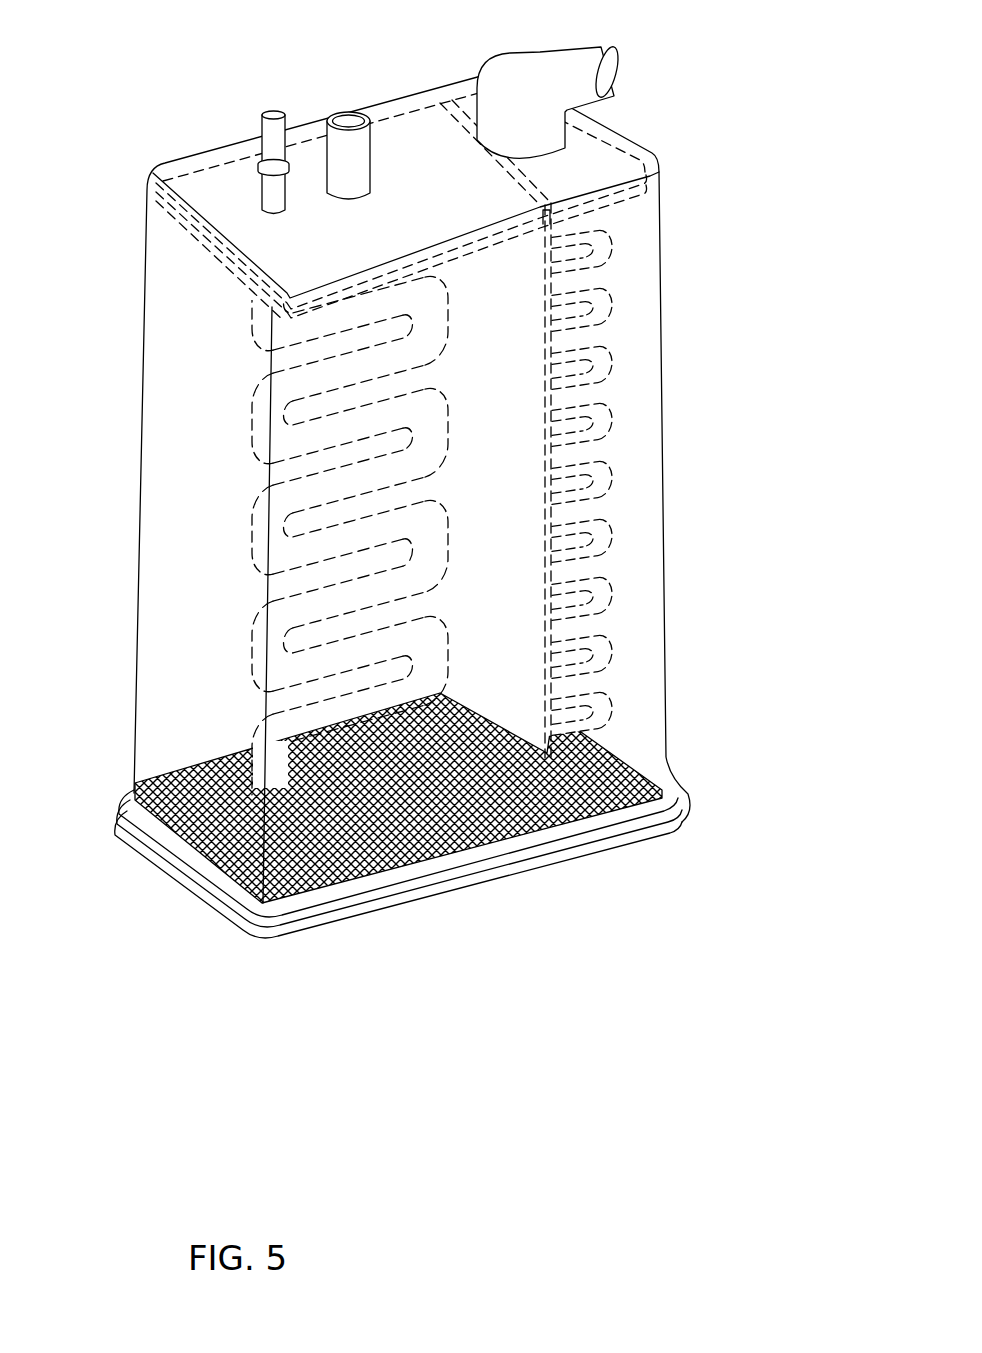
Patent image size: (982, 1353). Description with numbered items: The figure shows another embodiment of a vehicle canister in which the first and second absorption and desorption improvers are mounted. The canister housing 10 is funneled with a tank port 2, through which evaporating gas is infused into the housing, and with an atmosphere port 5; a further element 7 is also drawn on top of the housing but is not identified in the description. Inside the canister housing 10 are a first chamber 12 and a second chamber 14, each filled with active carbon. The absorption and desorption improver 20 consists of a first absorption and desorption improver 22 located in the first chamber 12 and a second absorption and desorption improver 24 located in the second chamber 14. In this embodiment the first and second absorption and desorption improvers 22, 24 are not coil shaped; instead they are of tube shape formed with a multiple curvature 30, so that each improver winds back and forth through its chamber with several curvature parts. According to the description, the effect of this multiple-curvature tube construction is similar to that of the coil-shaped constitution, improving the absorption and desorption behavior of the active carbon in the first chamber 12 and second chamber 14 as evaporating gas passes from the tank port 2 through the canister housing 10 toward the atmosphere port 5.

The tank port 2 is at (273, 112).
The inlet tube 7 is at (347, 112).
The atmosphere port 5 is at (601, 66).
The canister housing 10 is at (547, 505).
The first chamber 12 is at (708, 312).
The second chamber 14 is at (779, 308).
The multiple curvature 30 is at (710, 412).
The absorption and desorption improver 20 is at (398, 854).
The first absorption and desorption improver 22 is at (403, 741).
The second absorption and desorption improver 24 is at (604, 735).